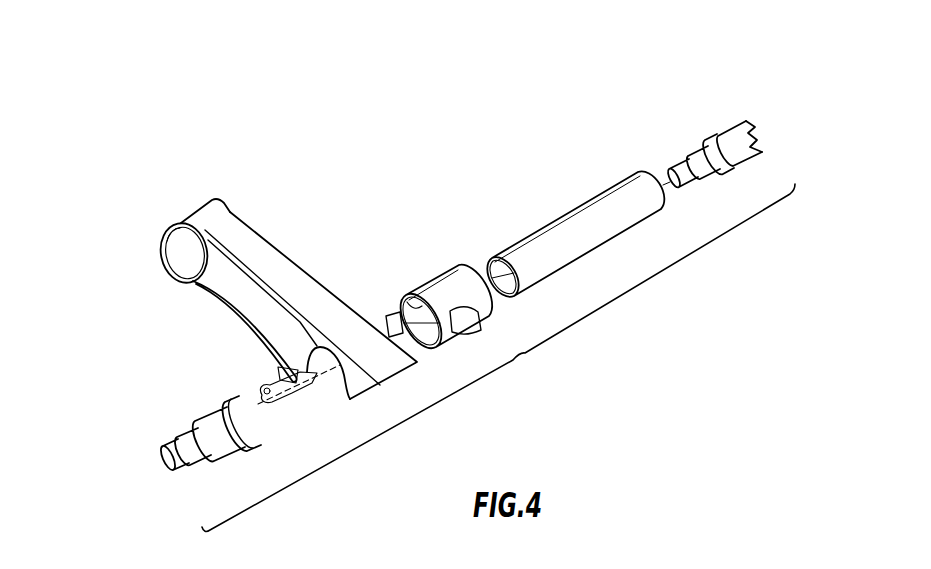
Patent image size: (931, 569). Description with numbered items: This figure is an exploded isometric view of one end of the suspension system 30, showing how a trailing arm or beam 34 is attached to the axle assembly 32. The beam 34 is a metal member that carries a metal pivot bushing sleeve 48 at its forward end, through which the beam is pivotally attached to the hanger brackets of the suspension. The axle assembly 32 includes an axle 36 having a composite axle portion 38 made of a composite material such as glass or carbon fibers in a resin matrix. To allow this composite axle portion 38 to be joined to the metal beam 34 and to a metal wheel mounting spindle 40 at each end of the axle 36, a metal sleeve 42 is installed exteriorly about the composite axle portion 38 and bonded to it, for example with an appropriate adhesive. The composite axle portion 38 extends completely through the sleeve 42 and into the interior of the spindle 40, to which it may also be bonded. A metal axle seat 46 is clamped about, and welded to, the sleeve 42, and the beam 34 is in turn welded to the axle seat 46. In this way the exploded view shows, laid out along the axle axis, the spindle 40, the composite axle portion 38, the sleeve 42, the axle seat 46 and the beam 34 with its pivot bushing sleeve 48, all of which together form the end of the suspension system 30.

The suspension system 30 is at (183, 170).
The axle assembly 32 is at (732, 109).
The beam 34 is at (302, 269).
The axle 36 is at (523, 358).
The composite axle portion 38 is at (750, 162).
The wheel mounting spindle 40 is at (187, 430).
The sleeve 42 is at (573, 207).
The axle seat 46 is at (430, 283).
The pivot bushing sleeve 48 is at (233, 208).